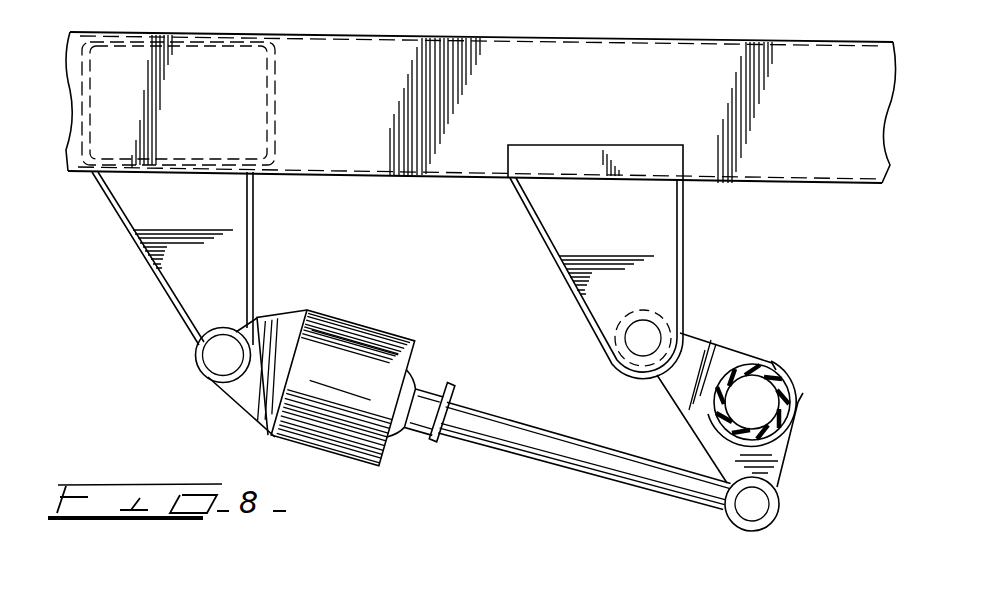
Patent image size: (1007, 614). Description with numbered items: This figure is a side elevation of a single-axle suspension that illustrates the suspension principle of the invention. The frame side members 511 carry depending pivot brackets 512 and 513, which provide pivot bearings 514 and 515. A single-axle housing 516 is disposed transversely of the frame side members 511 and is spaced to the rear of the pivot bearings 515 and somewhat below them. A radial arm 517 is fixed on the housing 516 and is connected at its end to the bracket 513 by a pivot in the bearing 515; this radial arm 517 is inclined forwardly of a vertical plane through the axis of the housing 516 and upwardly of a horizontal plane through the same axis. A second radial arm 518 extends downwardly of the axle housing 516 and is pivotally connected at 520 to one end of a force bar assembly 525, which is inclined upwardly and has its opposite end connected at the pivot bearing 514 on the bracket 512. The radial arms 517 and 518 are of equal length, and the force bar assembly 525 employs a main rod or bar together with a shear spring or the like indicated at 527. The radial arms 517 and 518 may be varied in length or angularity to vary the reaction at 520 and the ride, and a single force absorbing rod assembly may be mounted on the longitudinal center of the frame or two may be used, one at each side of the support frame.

The frame side member 511 is at (505, 53).
The pivot bracket 512 is at (245, 258).
The pivot bracket 513 is at (684, 238).
The pivot bearing 514 is at (220, 358).
The pivot bearing 515 is at (638, 339).
The single-axle housing 516 is at (760, 396).
The radial arm 517 is at (722, 355).
The radial arm 518 is at (782, 448).
The pivot 520 is at (760, 503).
The force bar assembly 525 is at (515, 465).
The shear spring 527 is at (340, 435).